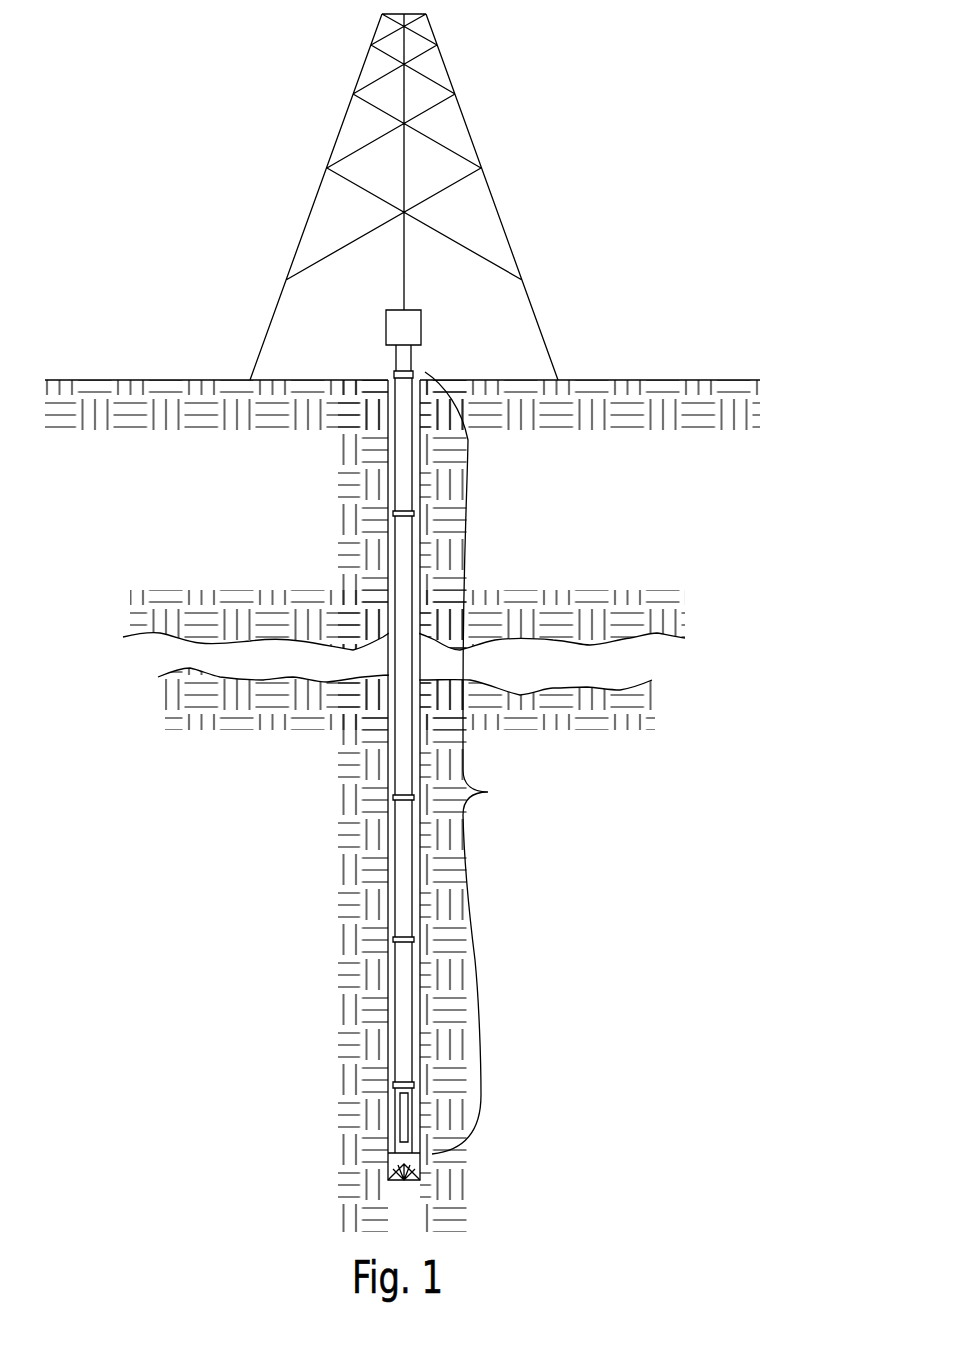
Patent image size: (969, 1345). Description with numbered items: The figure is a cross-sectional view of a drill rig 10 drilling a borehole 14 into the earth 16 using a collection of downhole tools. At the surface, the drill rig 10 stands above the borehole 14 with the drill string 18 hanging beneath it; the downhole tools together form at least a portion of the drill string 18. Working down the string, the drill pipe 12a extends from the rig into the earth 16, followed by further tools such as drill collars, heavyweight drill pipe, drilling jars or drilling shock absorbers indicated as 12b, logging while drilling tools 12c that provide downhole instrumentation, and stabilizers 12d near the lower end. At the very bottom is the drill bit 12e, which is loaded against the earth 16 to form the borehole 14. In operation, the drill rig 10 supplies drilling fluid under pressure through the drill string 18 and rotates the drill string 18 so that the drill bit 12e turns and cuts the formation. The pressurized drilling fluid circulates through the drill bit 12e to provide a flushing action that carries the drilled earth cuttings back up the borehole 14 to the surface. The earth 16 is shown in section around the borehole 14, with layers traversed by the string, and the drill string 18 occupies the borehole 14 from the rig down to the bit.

The drill rig 10 is at (492, 196).
The drill pipe 12a is at (404, 418).
The drilling shock absorbers and similar downhole tools 12b is at (403, 882).
The logging while drilling tools 12c is at (404, 998).
The stabilizers 12d is at (397, 1088).
The drill bit 12e is at (390, 1165).
The borehole 14 is at (388, 475).
The earth 16 is at (295, 618).
The drill string 18 is at (404, 802).